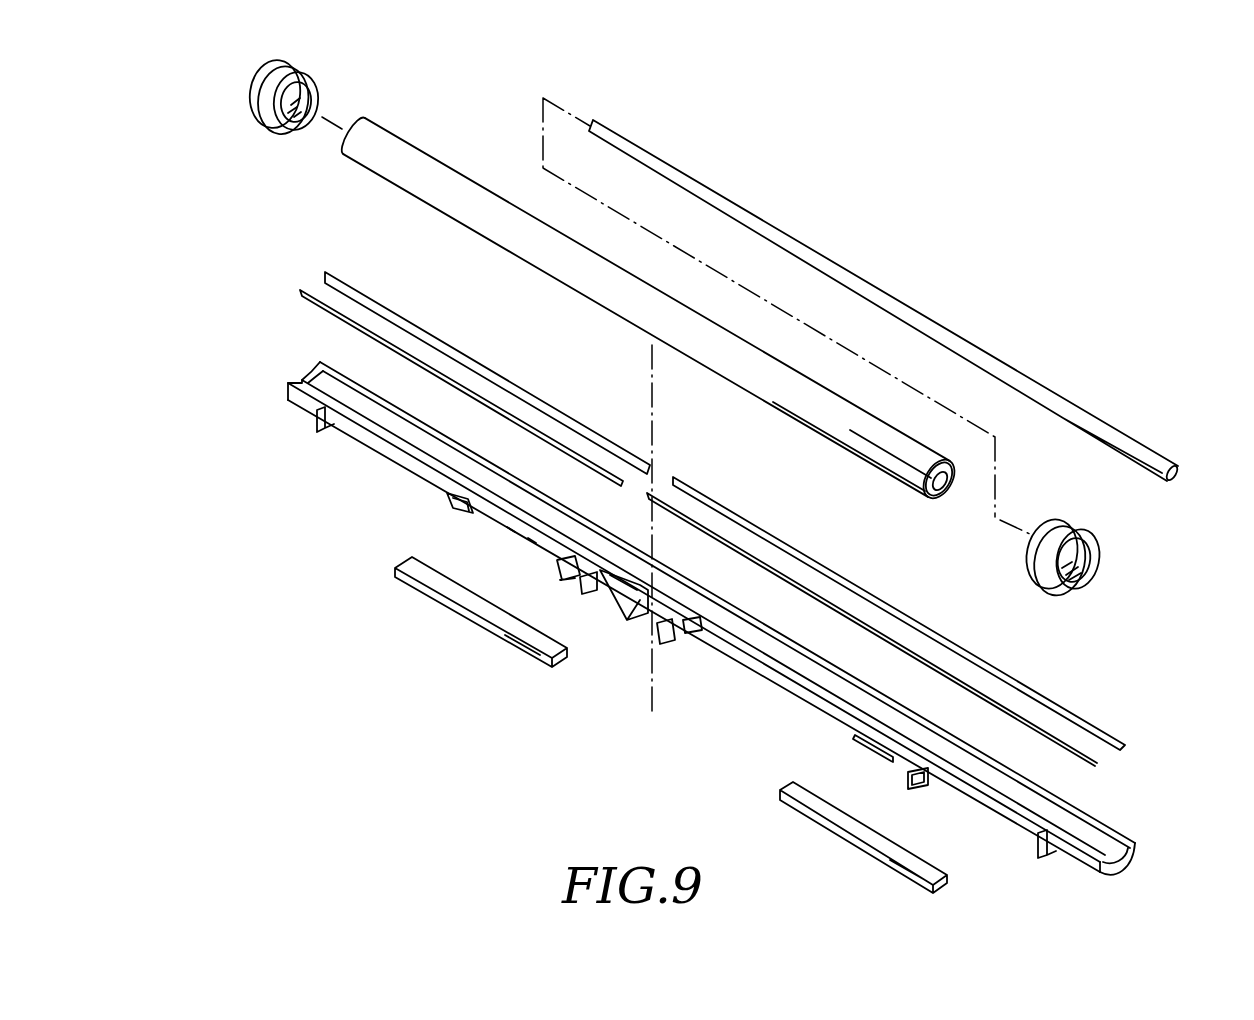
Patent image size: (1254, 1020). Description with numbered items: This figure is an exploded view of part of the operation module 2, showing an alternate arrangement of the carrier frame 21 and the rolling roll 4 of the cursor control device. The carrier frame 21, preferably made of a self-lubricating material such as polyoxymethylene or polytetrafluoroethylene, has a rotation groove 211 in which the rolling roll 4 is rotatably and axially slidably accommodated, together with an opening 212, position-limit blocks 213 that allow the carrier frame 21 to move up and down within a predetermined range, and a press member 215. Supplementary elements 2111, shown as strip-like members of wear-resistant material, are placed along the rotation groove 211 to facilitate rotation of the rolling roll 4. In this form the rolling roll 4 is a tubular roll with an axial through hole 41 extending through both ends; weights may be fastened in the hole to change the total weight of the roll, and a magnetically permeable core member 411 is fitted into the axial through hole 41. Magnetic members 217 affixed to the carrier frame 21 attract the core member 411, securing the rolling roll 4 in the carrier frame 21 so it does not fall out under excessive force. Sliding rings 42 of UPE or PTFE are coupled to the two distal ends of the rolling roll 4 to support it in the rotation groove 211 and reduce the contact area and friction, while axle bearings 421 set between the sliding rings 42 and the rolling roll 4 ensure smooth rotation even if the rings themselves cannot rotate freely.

The operation module 2 is at (1148, 746).
The carrier frame 21 is at (1095, 822).
The rotation groove 211 is at (1123, 850).
The supplementary elements 2111 is at (1047, 699).
The opening 212 is at (631, 606).
The position-limit blocks 213 is at (507, 530).
The press member 215 is at (684, 633).
The magnetic members 217 is at (862, 833).
The rolling roll 4 is at (654, 336).
The axial through hole 41 is at (941, 490).
The magnetically permeable core member 411 is at (1013, 372).
The sliding rings 42 is at (694, 328).
The axle bearings 421 is at (1077, 560).